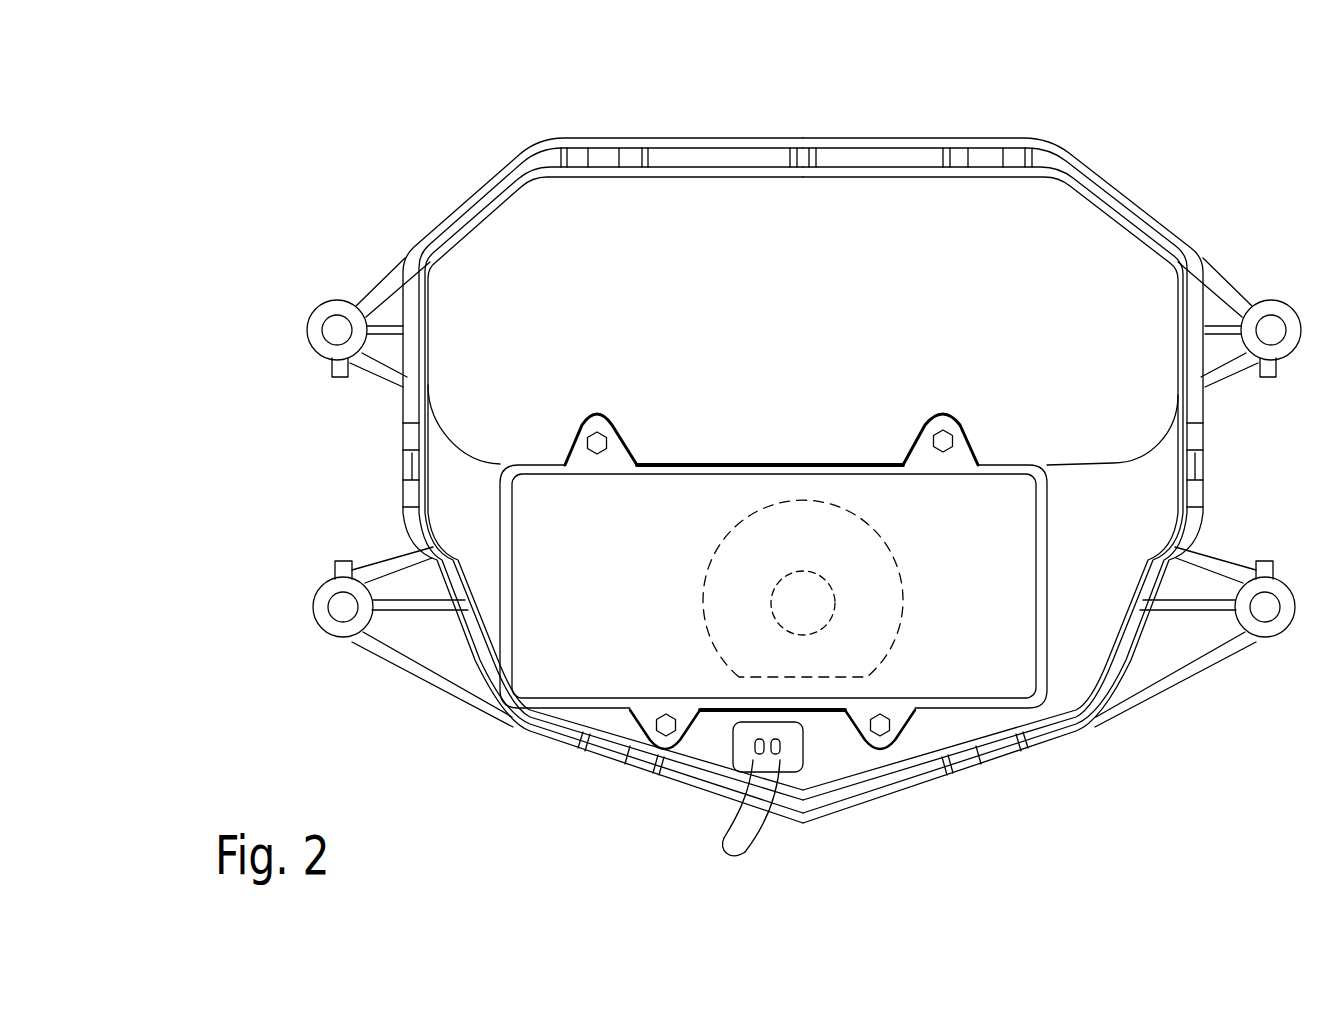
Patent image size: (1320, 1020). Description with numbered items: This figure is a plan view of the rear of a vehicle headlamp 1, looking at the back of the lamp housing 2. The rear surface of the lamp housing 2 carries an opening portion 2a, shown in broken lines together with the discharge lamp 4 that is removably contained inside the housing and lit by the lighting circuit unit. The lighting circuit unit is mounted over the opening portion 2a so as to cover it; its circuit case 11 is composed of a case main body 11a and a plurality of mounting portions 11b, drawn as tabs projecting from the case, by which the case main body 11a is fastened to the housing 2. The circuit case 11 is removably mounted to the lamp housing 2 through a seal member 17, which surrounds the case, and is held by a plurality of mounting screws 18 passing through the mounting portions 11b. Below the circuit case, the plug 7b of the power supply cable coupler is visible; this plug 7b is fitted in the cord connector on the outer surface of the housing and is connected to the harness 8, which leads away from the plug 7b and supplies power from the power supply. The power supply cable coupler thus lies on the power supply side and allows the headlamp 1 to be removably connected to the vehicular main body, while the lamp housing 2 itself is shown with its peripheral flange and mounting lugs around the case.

The headlamp 1 is at (1167, 149).
The lamp housing 2 is at (862, 138).
The opening portion 2a is at (815, 500).
The discharge lamp 4 is at (835, 588).
The plug 7b is at (806, 752).
The harness 8 is at (756, 835).
The circuit case 11 is at (767, 464).
The case main body 11a is at (666, 508).
The mounting portions 11b is at (627, 440).
The seal member 17 is at (1036, 510).
The mounting screws 18 is at (599, 432).